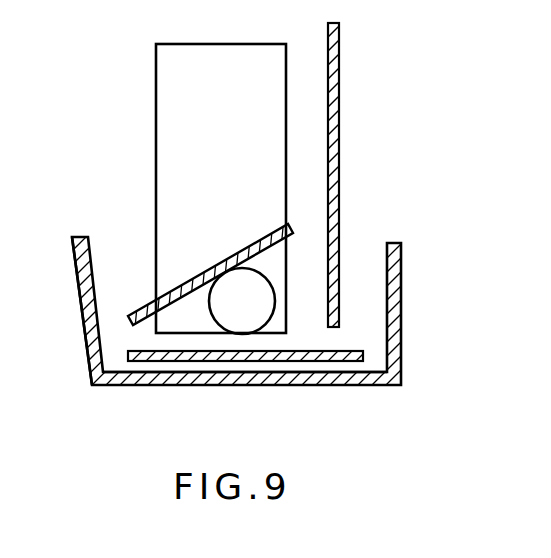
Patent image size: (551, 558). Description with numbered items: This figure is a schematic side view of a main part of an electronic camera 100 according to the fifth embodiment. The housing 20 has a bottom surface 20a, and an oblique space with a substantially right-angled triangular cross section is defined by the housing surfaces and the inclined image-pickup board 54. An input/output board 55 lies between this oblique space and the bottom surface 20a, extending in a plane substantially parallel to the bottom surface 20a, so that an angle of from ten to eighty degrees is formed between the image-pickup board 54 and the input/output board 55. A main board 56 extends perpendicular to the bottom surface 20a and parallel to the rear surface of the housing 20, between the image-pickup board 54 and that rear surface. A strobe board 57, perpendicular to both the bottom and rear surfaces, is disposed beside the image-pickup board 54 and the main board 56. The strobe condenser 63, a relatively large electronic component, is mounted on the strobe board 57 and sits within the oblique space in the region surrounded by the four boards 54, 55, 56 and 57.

The housing 20 is at (0, 138).
The bottom surface 20a is at (245, 407).
The image-pickup board 54 is at (200, 285).
The input/output board 55 is at (143, 347).
The main board 56 is at (340, 143).
The strobe board 57 is at (158, 131).
The strobe condenser 63 is at (242, 323).
The electronic camera 100 is at (83, 337).